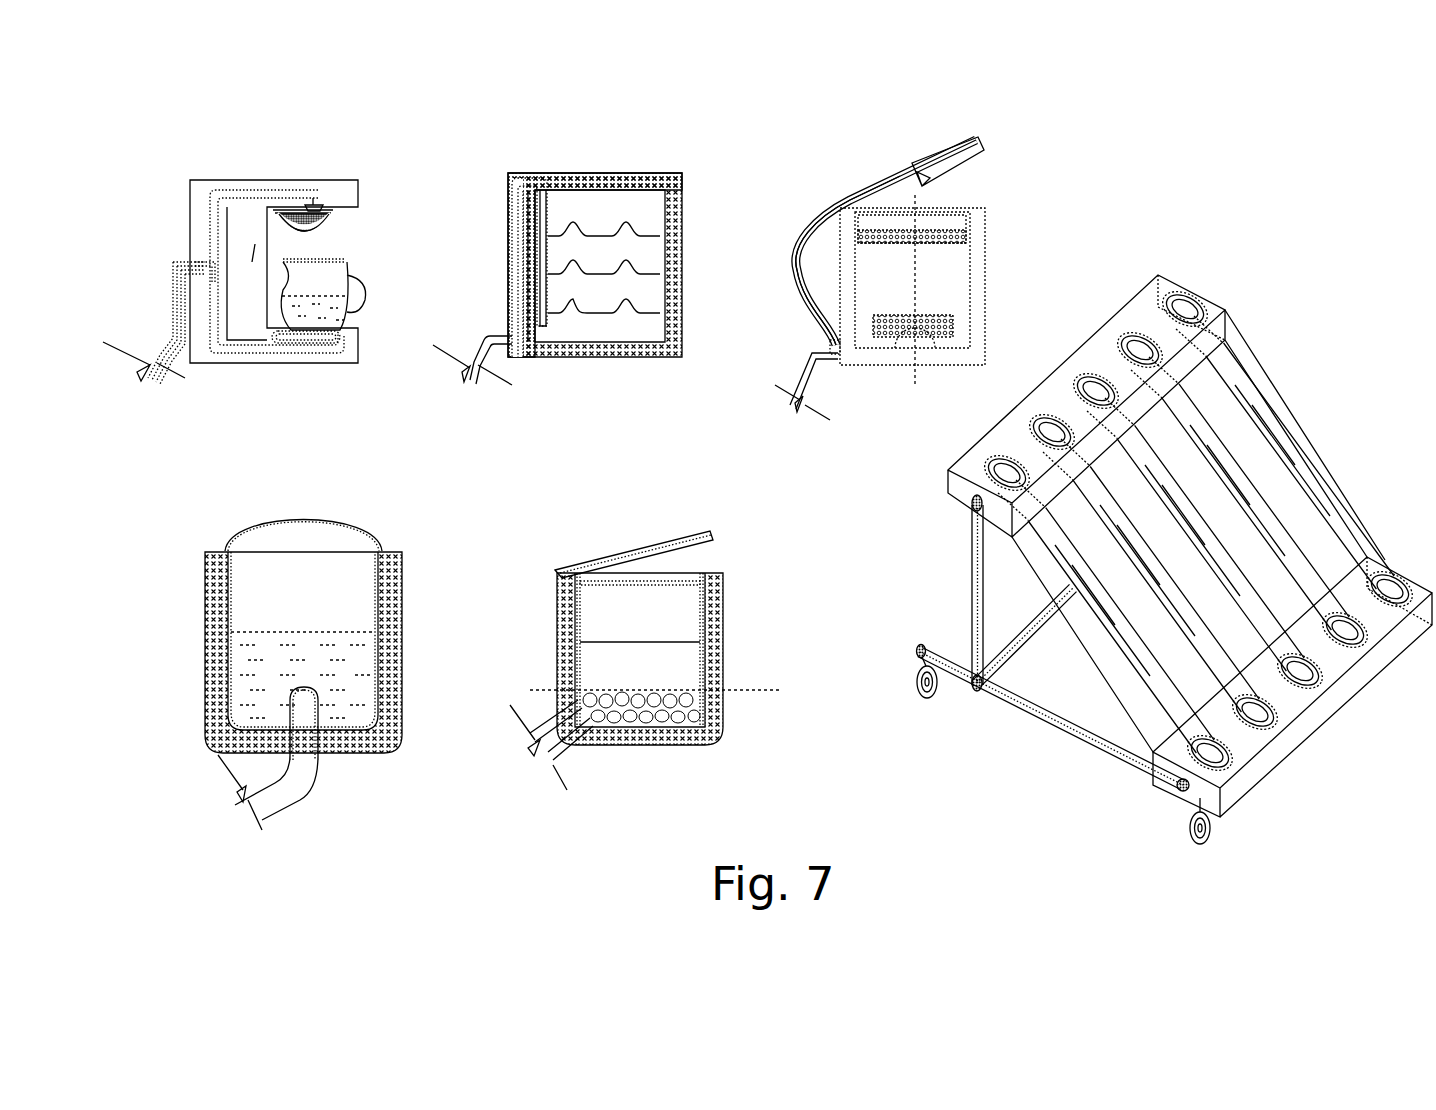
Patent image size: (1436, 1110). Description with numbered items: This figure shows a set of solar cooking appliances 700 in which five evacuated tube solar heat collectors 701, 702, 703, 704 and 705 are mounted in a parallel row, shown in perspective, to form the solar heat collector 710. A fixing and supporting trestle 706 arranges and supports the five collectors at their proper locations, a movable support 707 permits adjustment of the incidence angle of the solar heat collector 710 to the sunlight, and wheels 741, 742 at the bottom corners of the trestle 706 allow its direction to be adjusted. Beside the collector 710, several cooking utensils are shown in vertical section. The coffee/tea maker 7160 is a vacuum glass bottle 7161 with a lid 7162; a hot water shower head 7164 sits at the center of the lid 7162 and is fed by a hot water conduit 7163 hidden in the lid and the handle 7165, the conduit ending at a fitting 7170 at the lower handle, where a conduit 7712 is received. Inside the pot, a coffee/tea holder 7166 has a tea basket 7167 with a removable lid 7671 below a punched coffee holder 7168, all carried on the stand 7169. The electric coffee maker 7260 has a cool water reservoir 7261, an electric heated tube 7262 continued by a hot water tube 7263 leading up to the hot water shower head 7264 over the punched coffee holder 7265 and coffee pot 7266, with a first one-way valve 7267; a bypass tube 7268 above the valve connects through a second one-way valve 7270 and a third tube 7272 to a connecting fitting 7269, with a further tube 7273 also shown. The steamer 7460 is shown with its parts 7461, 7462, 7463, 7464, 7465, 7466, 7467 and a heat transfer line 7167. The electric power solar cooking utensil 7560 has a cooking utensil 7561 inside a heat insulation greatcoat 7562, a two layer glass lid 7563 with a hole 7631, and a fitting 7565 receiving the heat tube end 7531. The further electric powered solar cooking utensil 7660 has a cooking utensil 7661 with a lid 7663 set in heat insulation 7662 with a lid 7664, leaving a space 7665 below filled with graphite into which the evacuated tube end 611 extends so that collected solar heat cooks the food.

The set of solar cooking appliances 700 is at (1158, 231).
The evacuated tube solar heat collector 701 is at (1343, 527).
The evacuated tube solar heat collector 702 is at (1321, 581).
The evacuated tube solar heat collector 703 is at (1266, 622).
The evacuated tube solar heat collector 704 is at (1218, 655).
The evacuated tube solar heat collector 705 is at (1135, 668).
The fixing and supporting trestle 706 is at (968, 497).
The movable support 707 is at (975, 590).
The solar heat collector 710 is at (1313, 432).
The wheel 741 is at (921, 681).
The wheel 742 is at (1207, 829).
The electric coffee maker 7260 is at (389, 158).
The cool water reservoir 7261 is at (258, 251).
The electric heated tube 7262 is at (346, 343).
The hot water tube 7263 is at (213, 195).
The hot water shower head 7264 is at (313, 200).
The punched coffee holder 7265 is at (331, 229).
The coffee pot 7266 is at (374, 262).
The first one-way valve 7267 is at (174, 268).
The bypass tube 7268 is at (201, 251).
The connecting fitting 7269 is at (182, 264).
The second one-way valve 7270 is at (190, 260).
The third tube 7272 is at (174, 297).
The water inlet tube 7273 is at (212, 264).
The steamer 7460 is at (690, 190).
The oven wall 7461 is at (678, 300).
The insulation 7462 is at (586, 172).
The heat pipe 7463 is at (515, 185).
The oven bottom 7464 is at (631, 348).
The inlet pipe 7465 is at (505, 335).
The oven rack 7466 is at (651, 236).
The heat exchanger tube 7467 is at (542, 268).
The tea basket 7167 is at (530, 238).
The coffee/tea maker 7160 is at (1031, 186).
The vacuum glass bottle 7161 is at (983, 266).
The lid 7162 is at (881, 173).
The hot water conduit 7163 is at (810, 210).
The hot water shower head 7164 is at (920, 172).
The handle 7165 is at (800, 297).
The coffee/tea holder 7166 is at (968, 215).
The punched coffee holder 7168 is at (926, 221).
The stand 7169 is at (912, 290).
The fitting 7170 is at (828, 347).
The removable lid 7671 is at (922, 326).
The outlet pipe 7712 is at (826, 353).
The electric power solar cooking utensil 7560 is at (433, 562).
The cooking utensil 7561 is at (382, 641).
The heat insulation greatcoat 7562 is at (401, 660).
The two layer glass lid 7563 is at (362, 528).
The hole 7631 is at (266, 524).
The fitting 7565 is at (305, 684).
The end of heat tube 7531 is at (317, 706).
The electric powered solar cooking utensil 7660 is at (742, 531).
The cooking utensil 7661 is at (706, 610).
The heat insulation 7662 is at (719, 630).
The lid 7663 is at (674, 580).
The lid 7664 is at (677, 546).
The space 7665 is at (696, 710).
The heat pipes 611 is at (583, 735).